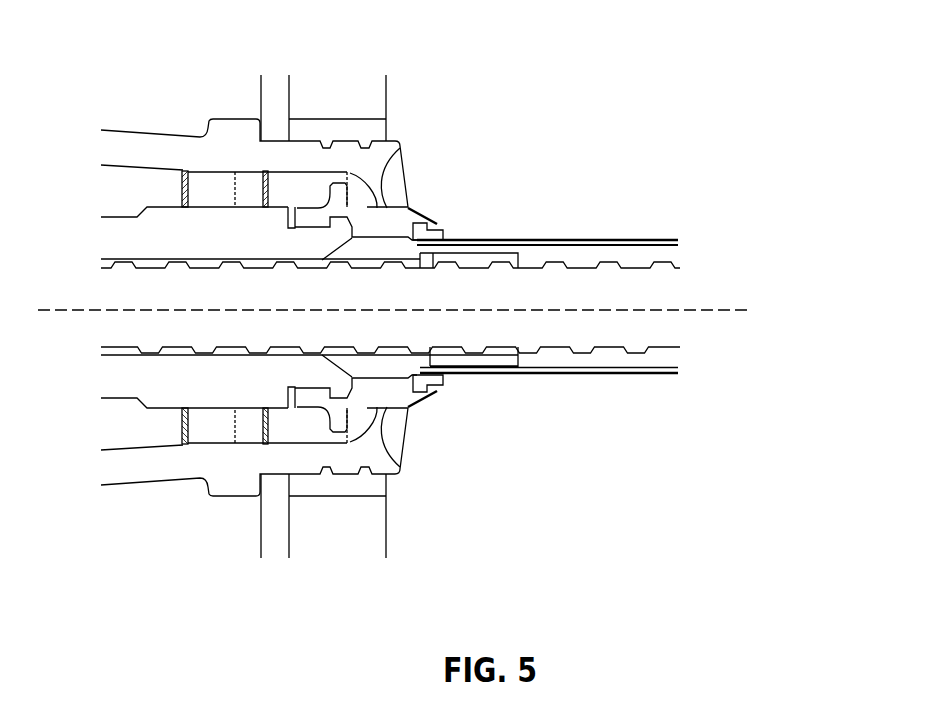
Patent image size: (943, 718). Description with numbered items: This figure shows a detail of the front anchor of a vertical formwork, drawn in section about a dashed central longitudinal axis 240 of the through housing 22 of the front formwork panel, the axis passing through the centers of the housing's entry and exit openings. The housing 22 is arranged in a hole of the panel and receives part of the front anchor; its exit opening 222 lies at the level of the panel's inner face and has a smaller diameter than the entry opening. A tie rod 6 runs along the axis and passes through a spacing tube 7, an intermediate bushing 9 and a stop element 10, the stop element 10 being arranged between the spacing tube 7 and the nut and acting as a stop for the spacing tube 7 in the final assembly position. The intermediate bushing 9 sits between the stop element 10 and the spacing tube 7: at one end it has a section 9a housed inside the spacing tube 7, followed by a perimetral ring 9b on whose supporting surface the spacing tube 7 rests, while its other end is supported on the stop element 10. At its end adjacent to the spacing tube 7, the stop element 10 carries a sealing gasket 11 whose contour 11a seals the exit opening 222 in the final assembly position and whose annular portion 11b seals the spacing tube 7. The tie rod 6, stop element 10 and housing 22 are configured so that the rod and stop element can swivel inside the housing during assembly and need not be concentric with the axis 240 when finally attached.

The housing 22 is at (162, 147).
The stop element 10 is at (210, 237).
The intermediate bushing 9 is at (380, 253).
The exit opening 222 is at (395, 166).
The perimetral ring 9b is at (420, 240).
The section 9a is at (500, 253).
The spacing tube 7 is at (650, 239).
The central longitudinal axis 240 is at (713, 310).
The tie rod 6 is at (575, 327).
The annular portion 11b is at (440, 382).
The contour 11a is at (403, 465).
The sealing gasket 11 is at (378, 362).